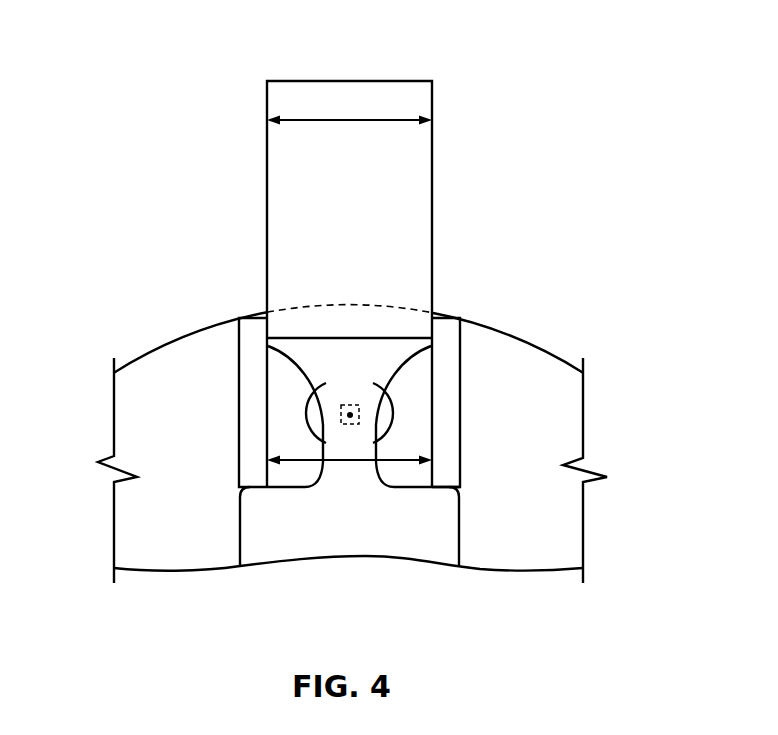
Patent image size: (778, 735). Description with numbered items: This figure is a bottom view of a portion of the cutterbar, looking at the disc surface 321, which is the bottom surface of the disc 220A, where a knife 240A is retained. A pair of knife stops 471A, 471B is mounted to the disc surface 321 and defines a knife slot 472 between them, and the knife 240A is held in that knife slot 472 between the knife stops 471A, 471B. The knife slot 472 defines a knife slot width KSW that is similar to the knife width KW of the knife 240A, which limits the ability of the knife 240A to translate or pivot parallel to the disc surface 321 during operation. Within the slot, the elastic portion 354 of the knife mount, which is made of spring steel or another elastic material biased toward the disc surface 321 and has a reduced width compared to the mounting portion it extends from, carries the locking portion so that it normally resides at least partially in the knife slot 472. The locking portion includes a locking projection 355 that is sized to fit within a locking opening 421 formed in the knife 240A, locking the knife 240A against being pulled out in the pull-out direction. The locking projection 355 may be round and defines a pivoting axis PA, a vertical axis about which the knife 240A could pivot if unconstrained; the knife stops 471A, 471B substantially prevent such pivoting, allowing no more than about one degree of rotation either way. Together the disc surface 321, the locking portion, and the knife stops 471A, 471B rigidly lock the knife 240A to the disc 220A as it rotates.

The disc 220A is at (148, 352).
The disc surface 321 is at (205, 410).
The knife 240A is at (433, 130).
The knife width KW is at (353, 120).
The knife stop 471A is at (248, 358).
The knife stop 471B is at (448, 337).
The elastic portion 354 is at (384, 478).
The knife slot 472 is at (281, 408).
The locking opening 421 is at (393, 418).
The locking projection 355 is at (352, 404).
The pivoting axis PA is at (348, 413).
The knife slot width KSW is at (362, 462).